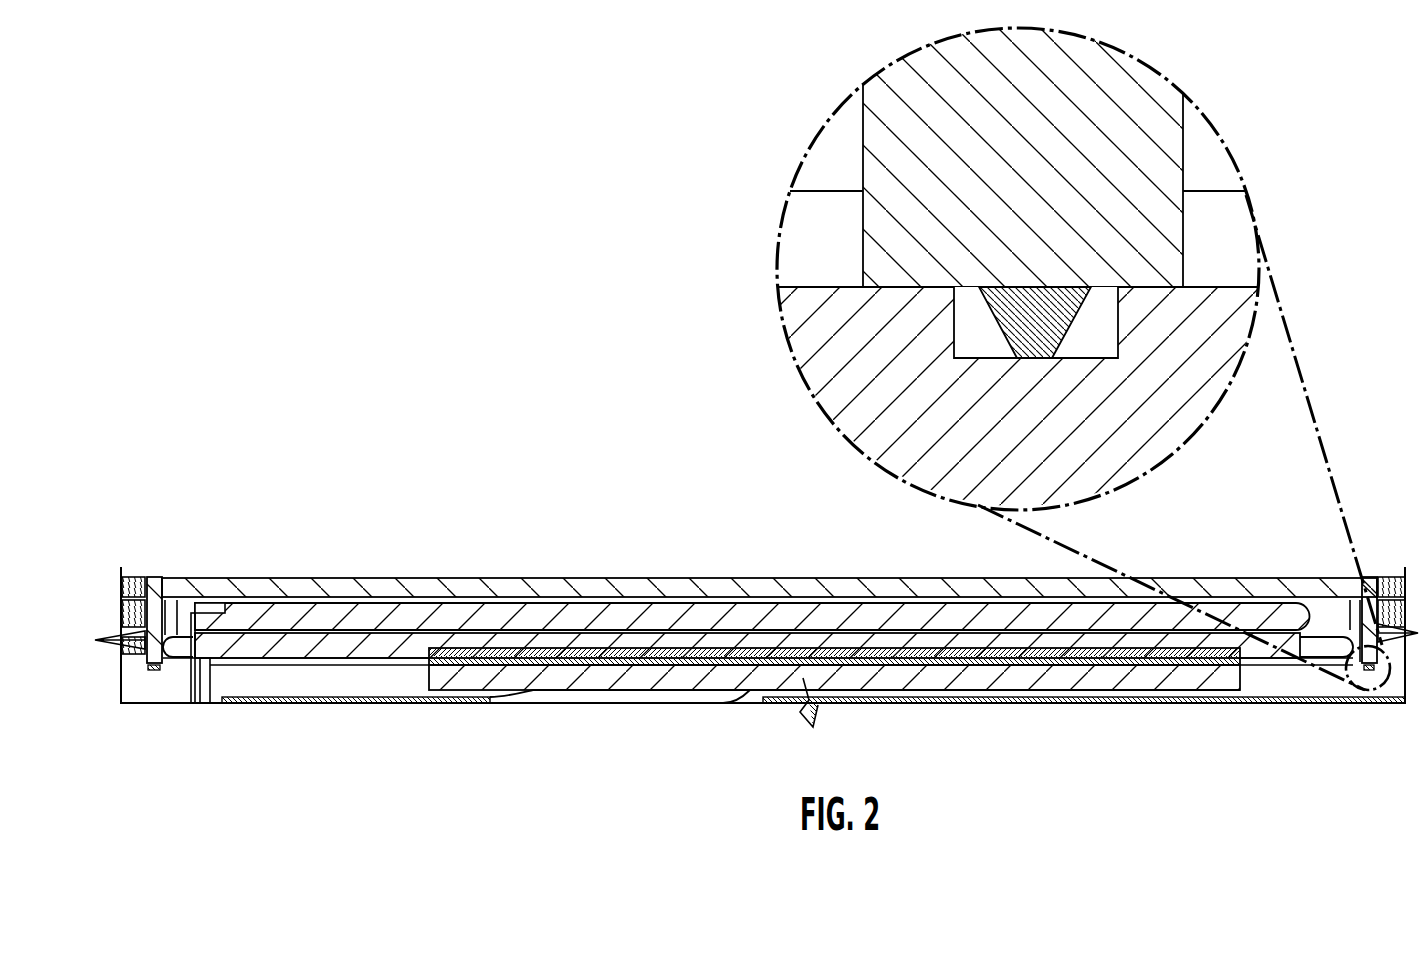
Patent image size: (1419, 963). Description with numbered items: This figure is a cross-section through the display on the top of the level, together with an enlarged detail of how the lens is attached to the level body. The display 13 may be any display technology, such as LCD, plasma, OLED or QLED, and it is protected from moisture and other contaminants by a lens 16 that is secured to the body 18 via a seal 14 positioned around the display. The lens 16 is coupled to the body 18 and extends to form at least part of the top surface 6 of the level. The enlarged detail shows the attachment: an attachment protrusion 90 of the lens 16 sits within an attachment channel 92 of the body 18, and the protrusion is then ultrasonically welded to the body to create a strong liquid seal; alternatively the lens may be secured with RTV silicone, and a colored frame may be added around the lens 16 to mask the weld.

The top surface 6 is at (756, 445).
The display 13 is at (872, 662).
The seal 14 is at (1032, 308).
The lens 16 is at (1110, 150).
The body 18 is at (855, 378).
The attachment protrusion 90 is at (1078, 322).
The attachment channel 92 is at (975, 322).